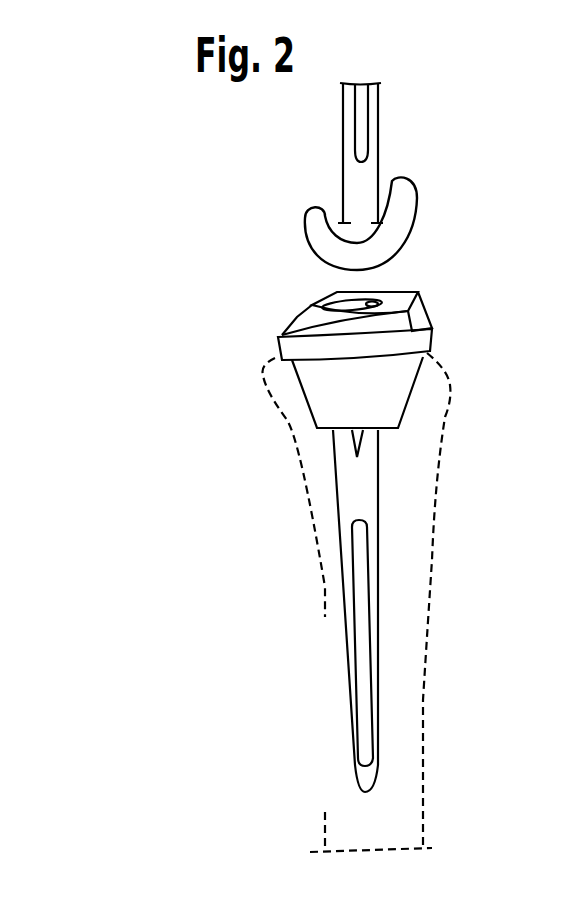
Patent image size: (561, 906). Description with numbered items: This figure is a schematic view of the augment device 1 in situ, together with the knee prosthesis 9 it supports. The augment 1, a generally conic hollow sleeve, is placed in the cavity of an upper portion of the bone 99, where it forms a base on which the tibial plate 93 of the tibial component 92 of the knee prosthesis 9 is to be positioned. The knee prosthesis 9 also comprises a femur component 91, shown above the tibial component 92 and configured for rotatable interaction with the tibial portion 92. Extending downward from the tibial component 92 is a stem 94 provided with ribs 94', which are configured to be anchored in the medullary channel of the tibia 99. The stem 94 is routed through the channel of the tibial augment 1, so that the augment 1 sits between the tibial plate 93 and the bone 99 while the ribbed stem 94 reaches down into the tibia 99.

The augment device 1 is at (388, 393).
The knee prosthesis 9 is at (432, 258).
The femur component 91 is at (355, 182).
The tibial component 92 is at (303, 327).
The tibial plate 93 is at (423, 340).
The stem 94 is at (313, 611).
The ribs 94' is at (366, 598).
The bone 99 is at (413, 525).